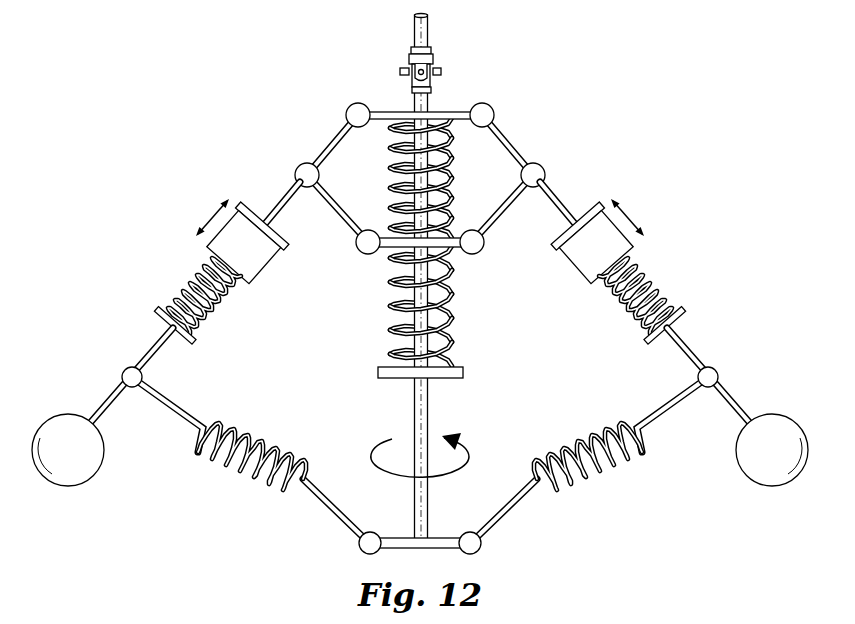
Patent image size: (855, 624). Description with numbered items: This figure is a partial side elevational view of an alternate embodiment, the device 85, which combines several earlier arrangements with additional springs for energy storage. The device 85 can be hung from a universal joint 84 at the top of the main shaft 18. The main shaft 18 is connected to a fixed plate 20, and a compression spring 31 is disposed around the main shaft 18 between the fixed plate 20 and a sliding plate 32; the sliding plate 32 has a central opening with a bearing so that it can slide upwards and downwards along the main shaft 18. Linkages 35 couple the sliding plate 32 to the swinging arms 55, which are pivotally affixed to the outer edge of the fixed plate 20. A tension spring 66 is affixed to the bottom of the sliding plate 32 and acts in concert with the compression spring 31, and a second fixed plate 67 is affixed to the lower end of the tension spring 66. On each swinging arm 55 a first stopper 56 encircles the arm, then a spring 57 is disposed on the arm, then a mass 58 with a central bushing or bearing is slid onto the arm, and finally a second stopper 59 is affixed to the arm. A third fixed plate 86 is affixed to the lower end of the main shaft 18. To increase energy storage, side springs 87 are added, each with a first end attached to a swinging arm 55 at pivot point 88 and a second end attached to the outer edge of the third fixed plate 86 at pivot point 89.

The main shaft 18 is at (414, 414).
The fixed plate 20 is at (447, 110).
The compression spring 31 is at (388, 152).
The sliding plate 32 is at (389, 247).
The linkages 35 is at (335, 215).
The swinging arms 55 is at (148, 352).
The first stopper 56 is at (160, 313).
The spring 57 is at (189, 283).
The mass 58 is at (259, 275).
The second stopper 59 is at (251, 204).
The tension spring 66 is at (450, 297).
The second fixed plate 67 is at (464, 372).
The universal joint 84 is at (410, 51).
The device 85 is at (669, 84).
The third fixed plate 86 is at (397, 537).
The side springs 87 is at (220, 468).
The pivot point 88 is at (123, 376).
The pivot point 89 is at (359, 548).